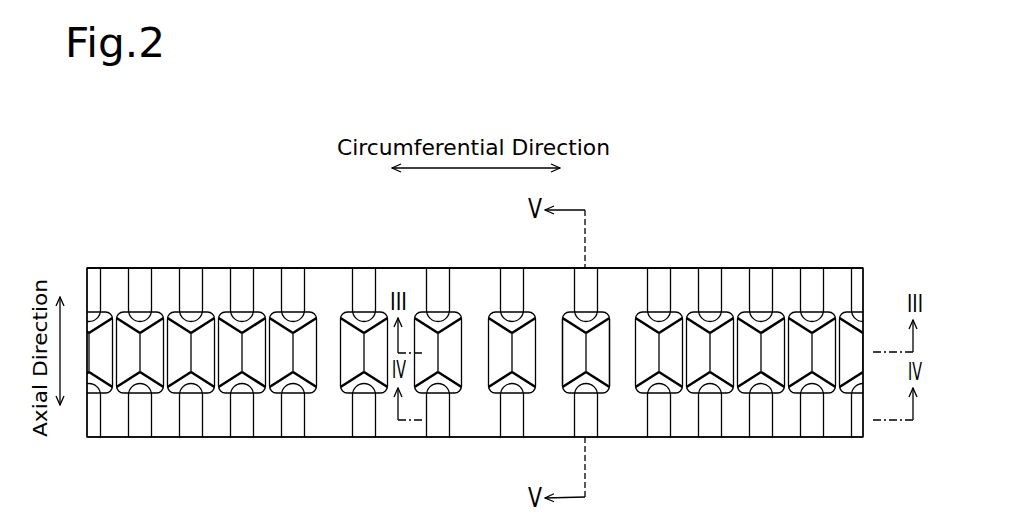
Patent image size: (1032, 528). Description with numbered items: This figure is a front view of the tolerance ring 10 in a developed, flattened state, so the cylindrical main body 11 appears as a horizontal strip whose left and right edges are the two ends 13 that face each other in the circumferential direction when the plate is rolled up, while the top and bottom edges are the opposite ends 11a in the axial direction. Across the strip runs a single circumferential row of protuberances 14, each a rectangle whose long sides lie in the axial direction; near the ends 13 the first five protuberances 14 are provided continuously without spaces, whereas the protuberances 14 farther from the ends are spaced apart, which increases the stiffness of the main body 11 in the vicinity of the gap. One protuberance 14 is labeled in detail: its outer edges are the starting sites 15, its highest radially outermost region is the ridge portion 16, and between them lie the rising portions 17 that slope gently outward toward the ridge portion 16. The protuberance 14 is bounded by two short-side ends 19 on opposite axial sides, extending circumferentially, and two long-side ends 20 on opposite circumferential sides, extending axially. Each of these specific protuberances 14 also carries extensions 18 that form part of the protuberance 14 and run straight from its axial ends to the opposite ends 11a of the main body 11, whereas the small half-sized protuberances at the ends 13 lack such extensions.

The tolerance ring 10 is at (158, 170).
The main body 11 is at (258, 267).
The opposite ends in the axial direction 11a is at (327, 268).
The ends 13 is at (86, 279).
The protuberance 14 is at (100, 310).
The starting site 15 is at (597, 318).
The ridge portion 16 is at (583, 345).
The rising portion 17 is at (567, 363).
The extension 18 is at (587, 282).
The short-side end 19 is at (572, 317).
The long-side end 20 is at (613, 373).